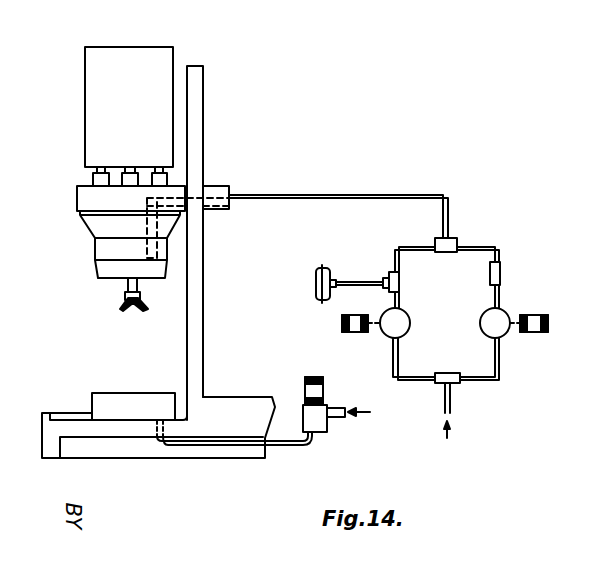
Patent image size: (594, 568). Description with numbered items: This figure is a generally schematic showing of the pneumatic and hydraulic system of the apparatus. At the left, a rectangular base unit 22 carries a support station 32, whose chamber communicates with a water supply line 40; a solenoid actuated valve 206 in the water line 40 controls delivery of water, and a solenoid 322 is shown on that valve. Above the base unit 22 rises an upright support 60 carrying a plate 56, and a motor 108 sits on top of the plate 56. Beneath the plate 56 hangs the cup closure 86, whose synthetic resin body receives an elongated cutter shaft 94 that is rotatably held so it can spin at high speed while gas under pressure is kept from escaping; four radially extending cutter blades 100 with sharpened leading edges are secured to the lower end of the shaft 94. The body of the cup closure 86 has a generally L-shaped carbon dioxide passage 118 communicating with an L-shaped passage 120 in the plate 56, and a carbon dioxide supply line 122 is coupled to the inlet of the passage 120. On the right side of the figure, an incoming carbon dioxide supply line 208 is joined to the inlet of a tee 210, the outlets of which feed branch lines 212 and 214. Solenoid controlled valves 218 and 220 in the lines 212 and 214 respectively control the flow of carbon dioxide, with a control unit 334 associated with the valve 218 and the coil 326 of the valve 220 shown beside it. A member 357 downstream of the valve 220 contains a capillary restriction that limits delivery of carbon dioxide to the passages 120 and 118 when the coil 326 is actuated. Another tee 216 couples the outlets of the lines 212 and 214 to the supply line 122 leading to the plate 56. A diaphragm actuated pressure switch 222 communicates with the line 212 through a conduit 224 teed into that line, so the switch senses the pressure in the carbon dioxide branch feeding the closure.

The motor 108 is at (92, 75).
The support column 60 is at (194, 112).
The plate 56 is at (77, 194).
The cup closure 86 is at (93, 241).
The cutter shaft 94 is at (126, 293).
The cutter blades 100 is at (135, 306).
The carbon dioxide passage 118 is at (157, 246).
The L-shaped passage 120 is at (213, 185).
The carbon dioxide supply line 122 is at (337, 193).
The tee 216 is at (440, 253).
The branch line 212 is at (400, 303).
The branch line 214 is at (499, 298).
The member 357 is at (500, 272).
The solenoid controlled valve 218 is at (385, 336).
The solenoid controlled valve 220 is at (478, 315).
The control unit 334 is at (338, 324).
The coil 326 is at (535, 334).
The tee 210 is at (438, 385).
The carbon dioxide supply line 208 is at (451, 406).
The diaphragm actuated pressure switch 222 is at (315, 289).
The conduit 224 is at (350, 281).
The base unit 22 is at (95, 463).
The support station 32 is at (92, 393).
The water supply line 40 is at (225, 446).
The solenoid actuated valve 206 is at (327, 429).
The solenoid 322 is at (305, 392).